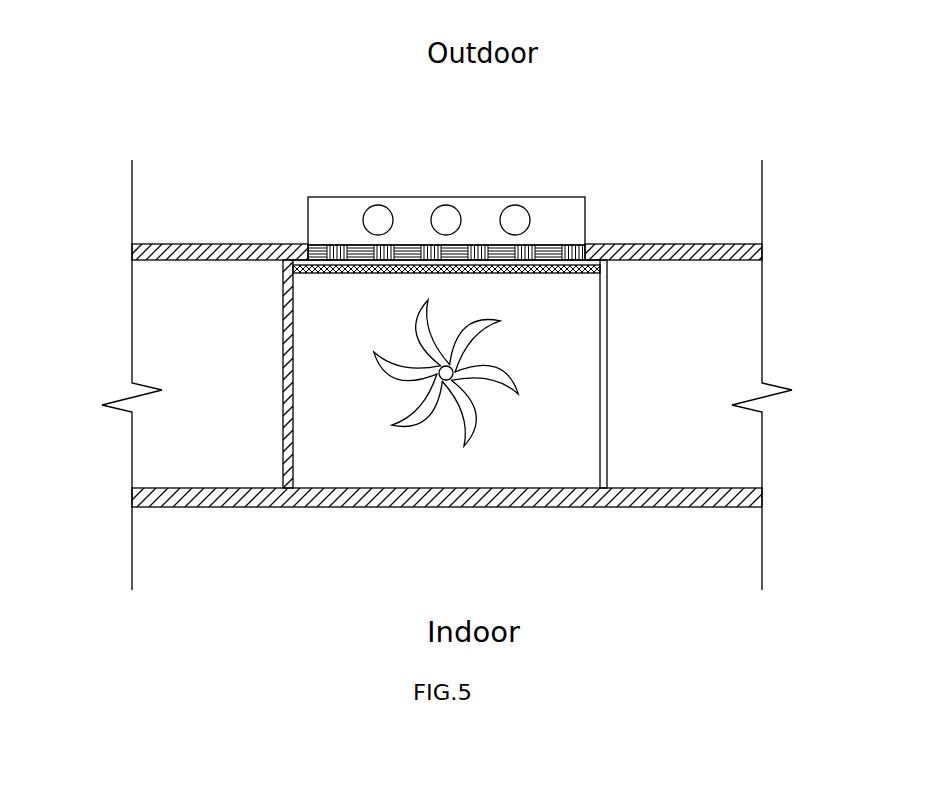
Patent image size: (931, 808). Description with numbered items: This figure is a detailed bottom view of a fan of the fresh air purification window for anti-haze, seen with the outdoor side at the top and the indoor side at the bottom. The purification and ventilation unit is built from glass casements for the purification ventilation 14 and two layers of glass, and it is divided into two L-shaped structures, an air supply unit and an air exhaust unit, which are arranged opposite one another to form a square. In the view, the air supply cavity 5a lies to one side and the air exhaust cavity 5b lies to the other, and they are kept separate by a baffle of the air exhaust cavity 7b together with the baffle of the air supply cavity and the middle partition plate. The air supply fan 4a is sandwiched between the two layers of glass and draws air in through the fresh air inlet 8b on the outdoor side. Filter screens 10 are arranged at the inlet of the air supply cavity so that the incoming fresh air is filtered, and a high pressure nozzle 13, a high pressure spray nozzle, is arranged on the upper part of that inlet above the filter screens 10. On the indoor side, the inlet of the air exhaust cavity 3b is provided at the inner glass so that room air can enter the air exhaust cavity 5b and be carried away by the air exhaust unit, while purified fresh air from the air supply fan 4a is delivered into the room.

The air exhaust cavity 5b is at (200, 305).
The air supply cavity 5a is at (688, 302).
The high pressure nozzle 13 is at (378, 220).
The filter screens 10 is at (453, 270).
The fresh air inlet 8b is at (557, 250).
The baffle of the air exhaust cavity 7b is at (283, 377).
The air supply fan 4a is at (420, 420).
The glass casements for the purification ventilation 14 is at (543, 498).
The inlet of the air exhaust cavity 3b is at (608, 377).